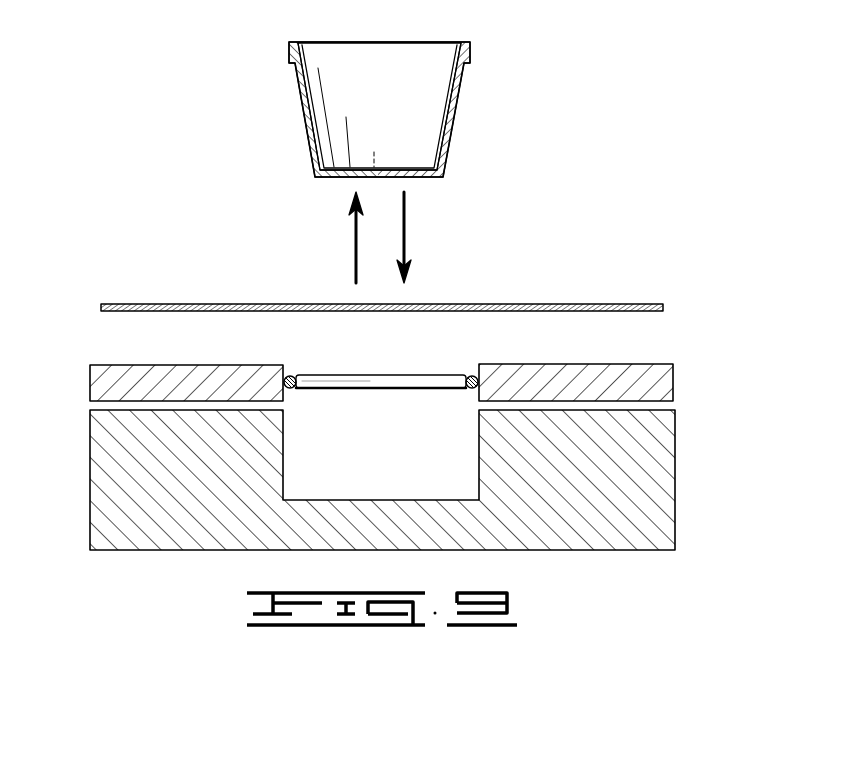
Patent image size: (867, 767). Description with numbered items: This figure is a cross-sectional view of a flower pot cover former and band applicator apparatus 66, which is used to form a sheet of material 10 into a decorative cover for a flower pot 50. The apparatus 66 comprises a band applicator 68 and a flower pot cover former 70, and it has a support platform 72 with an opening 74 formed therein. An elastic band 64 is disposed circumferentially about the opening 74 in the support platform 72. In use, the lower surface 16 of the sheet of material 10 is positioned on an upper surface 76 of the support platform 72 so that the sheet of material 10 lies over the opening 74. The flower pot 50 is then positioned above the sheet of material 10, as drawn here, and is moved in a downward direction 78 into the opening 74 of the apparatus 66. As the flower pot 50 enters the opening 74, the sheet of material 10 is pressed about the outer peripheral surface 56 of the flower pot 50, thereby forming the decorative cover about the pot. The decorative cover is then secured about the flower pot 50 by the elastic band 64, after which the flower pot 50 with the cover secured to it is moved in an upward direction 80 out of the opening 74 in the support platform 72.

The sheet of material 10 is at (401, 287).
The lower surface 16 is at (645, 311).
The flower pot 50 is at (463, 90).
The outer peripheral surface 56 is at (308, 137).
The elastic band 64 is at (325, 389).
The flower pot cover former and band applicator apparatus 66 is at (407, 433).
The band applicator 68 is at (151, 358).
The flower pot cover former 70 is at (678, 462).
The support platform 72 is at (90, 383).
The opening 74 is at (405, 417).
The upper surface 76 is at (560, 364).
The direction 78 is at (405, 236).
The direction 80 is at (355, 241).